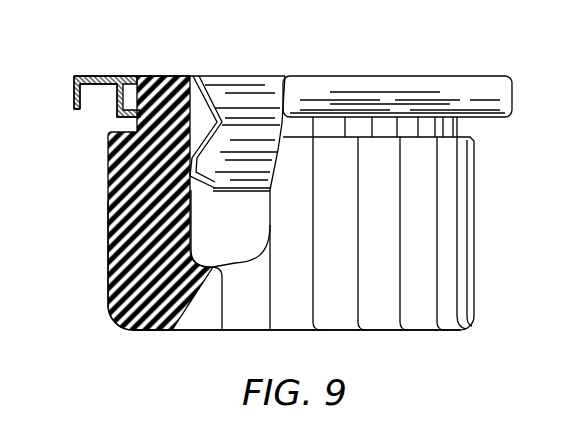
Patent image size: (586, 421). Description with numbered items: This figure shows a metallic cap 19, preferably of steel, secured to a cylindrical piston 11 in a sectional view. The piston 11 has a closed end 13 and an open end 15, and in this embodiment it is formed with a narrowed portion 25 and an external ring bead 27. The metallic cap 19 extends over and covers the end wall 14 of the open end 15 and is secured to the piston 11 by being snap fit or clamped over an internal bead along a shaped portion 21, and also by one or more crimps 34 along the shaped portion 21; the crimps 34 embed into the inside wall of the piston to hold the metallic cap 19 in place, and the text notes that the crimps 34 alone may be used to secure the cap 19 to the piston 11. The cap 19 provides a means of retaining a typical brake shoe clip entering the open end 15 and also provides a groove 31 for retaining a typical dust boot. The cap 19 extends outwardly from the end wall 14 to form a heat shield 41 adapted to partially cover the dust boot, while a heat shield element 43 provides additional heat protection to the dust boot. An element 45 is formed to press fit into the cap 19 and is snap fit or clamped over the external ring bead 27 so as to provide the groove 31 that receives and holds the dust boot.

The piston 11 is at (474, 233).
The closed end 13 is at (297, 322).
The end wall 14 is at (170, 75).
The open end 15 is at (232, 222).
The metallic cap 19 is at (255, 75).
The shaped portion 21 is at (108, 171).
The narrowed portion 25 is at (152, 75).
The external ring bead 27 is at (125, 75).
The groove 31 is at (140, 124).
The crimps 34 is at (158, 196).
The heat shield 41 is at (96, 71).
The heat shield element 43 is at (72, 106).
The element 45 is at (100, 106).